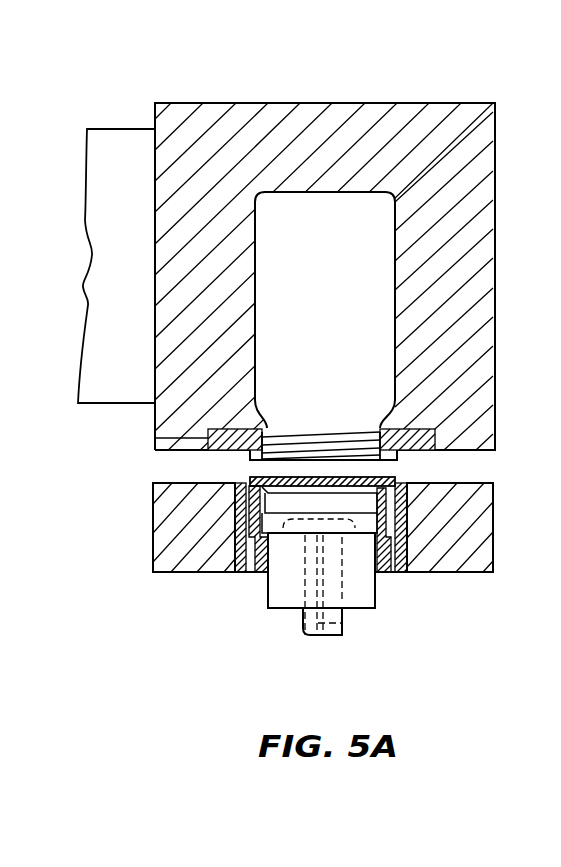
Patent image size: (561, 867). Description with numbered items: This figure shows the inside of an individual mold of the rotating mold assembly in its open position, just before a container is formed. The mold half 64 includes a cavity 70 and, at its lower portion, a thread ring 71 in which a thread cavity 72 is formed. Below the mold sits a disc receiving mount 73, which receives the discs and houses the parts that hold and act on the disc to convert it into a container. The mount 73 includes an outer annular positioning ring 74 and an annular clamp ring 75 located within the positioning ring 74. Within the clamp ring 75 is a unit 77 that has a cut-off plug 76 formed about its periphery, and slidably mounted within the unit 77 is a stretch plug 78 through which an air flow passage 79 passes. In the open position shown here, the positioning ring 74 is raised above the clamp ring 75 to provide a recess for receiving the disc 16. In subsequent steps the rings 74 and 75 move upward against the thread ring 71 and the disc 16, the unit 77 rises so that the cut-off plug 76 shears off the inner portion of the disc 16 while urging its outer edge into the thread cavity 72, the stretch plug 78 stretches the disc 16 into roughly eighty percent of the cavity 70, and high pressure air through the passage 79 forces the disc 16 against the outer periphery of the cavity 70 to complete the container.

The disc 16 is at (253, 478).
The mold half 64 is at (378, 112).
The cavity 70 is at (287, 217).
The thread ring 71 is at (158, 440).
The thread cavity 72 is at (277, 428).
The disc receiving mount 73 is at (158, 533).
The outer annular positioning ring 74 is at (237, 572).
The annular clamp ring 75 is at (257, 572).
The cut-off plug 76 is at (300, 527).
The unit 77 is at (330, 568).
The stretch plug 78 is at (360, 472).
The air flow passage 79 is at (347, 638).